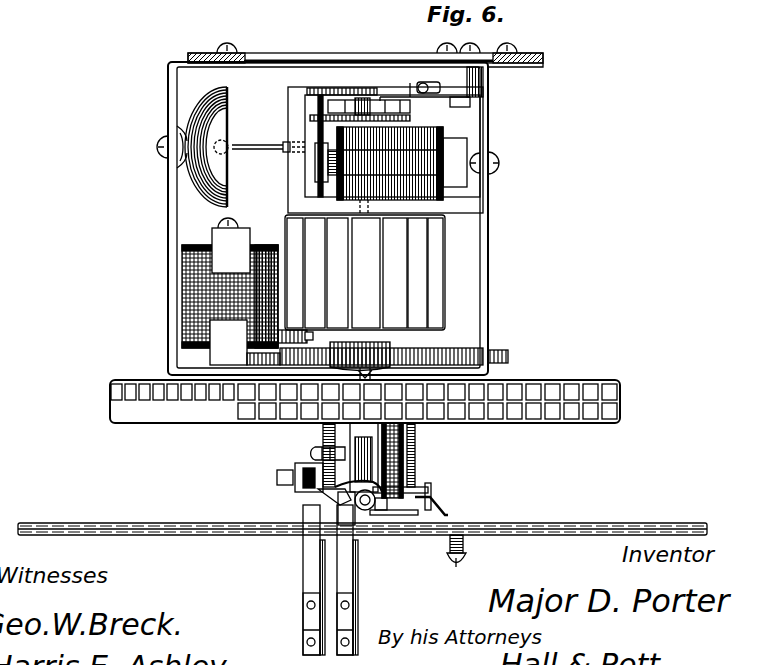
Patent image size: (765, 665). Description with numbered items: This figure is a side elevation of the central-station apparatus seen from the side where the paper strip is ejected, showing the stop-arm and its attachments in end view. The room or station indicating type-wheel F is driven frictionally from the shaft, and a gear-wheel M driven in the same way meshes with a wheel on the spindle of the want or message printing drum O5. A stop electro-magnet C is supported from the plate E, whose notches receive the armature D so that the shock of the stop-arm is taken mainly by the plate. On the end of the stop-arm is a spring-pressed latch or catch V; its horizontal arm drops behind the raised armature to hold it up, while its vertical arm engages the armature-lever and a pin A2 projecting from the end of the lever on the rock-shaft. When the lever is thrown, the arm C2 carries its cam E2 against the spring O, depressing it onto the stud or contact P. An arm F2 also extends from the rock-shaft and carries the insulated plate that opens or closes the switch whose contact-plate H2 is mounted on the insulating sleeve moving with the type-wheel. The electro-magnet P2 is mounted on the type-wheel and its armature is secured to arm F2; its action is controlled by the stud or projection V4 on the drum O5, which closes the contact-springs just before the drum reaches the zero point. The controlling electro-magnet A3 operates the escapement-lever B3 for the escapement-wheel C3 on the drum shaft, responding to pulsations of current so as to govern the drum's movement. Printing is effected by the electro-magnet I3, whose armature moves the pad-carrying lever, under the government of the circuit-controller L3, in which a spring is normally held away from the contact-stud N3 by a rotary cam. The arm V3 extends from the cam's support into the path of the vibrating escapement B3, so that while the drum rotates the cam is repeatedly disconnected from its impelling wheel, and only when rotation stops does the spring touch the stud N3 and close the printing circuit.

The arm V3 is at (405, 82).
The contact-stud N3 is at (430, 86).
The escapement-wheel C3 is at (386, 105).
The circuit-controller L3 is at (484, 84).
The escapement-lever B3 is at (411, 118).
The controlling electro-magnet A3 is at (447, 141).
The printing electro-magnet I3 is at (182, 292).
The want or message printing drum O5 is at (446, 268).
The gear-wheel M is at (508, 357).
The operating stud or projection V4 is at (307, 334).
The room or station indicating type-wheel F is at (368, 394).
The arm F2 is at (308, 453).
The electro-magnet P2 is at (405, 451).
The contact-plate H2 is at (305, 489).
The latch or catch V is at (322, 495).
The arm C2 is at (415, 490).
The cam E2 is at (432, 498).
The spring O is at (446, 513).
The plate E is at (258, 535).
The armature D is at (311, 537).
The electro-magnet C is at (318, 570).
The pin A2 is at (366, 511).
The stud or contact P is at (465, 545).
The spring cup S is at (455, 565).